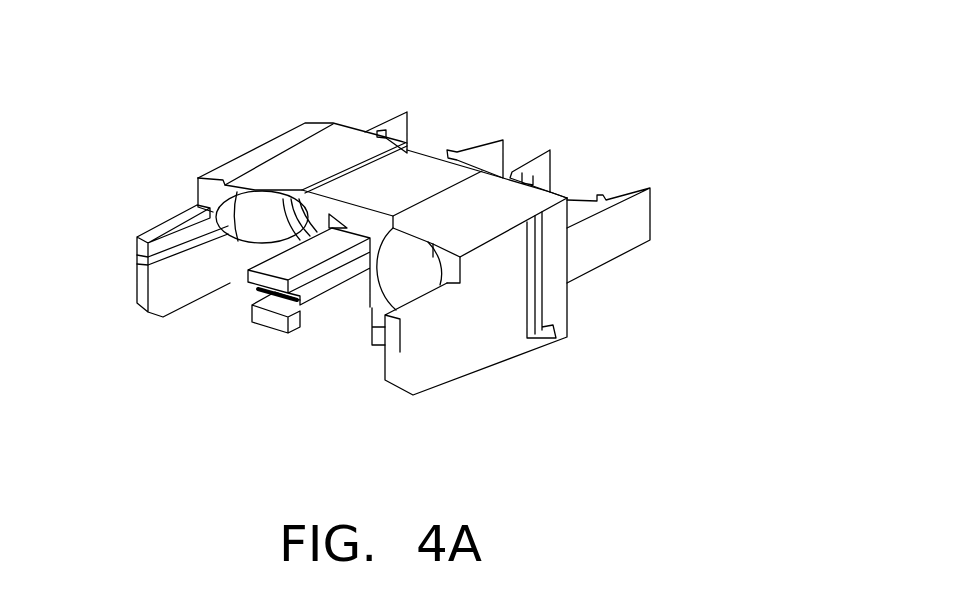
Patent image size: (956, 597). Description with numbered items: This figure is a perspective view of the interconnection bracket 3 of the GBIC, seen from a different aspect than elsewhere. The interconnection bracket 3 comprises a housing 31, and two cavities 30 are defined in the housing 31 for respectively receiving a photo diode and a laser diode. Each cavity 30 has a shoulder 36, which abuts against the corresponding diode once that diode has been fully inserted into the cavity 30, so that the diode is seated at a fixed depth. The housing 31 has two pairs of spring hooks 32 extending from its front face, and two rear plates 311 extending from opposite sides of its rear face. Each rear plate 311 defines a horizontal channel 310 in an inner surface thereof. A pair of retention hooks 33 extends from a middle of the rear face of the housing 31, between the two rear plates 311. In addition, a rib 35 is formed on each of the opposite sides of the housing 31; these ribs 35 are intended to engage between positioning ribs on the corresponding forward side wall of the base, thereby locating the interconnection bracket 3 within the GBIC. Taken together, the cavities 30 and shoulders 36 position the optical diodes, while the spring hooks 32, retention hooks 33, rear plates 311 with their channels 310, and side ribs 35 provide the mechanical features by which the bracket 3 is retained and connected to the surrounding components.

The interconnection bracket 3 is at (270, 123).
The cavity 30 is at (247, 258).
The housing 31 is at (497, 323).
The horizontal channel 310 is at (140, 271).
The rear plate 311 is at (432, 356).
The spring hook 32 is at (407, 112).
The retention hook 33 is at (281, 313).
The rib 35 is at (540, 263).
The shoulder 36 is at (245, 255).